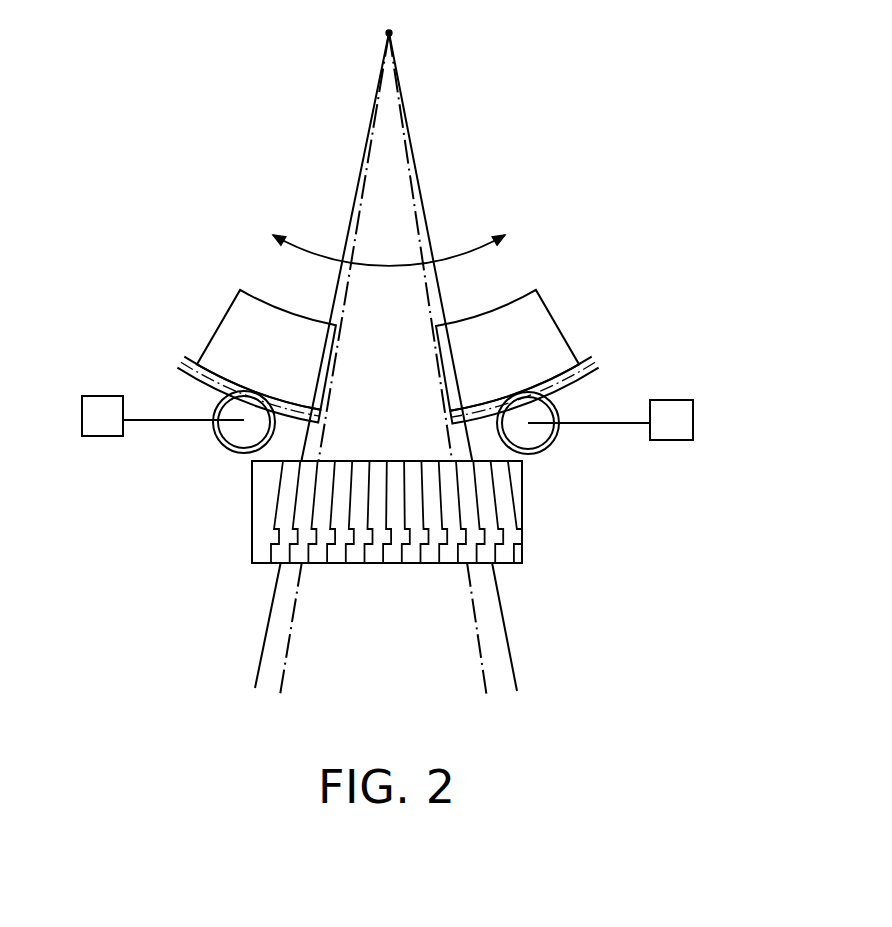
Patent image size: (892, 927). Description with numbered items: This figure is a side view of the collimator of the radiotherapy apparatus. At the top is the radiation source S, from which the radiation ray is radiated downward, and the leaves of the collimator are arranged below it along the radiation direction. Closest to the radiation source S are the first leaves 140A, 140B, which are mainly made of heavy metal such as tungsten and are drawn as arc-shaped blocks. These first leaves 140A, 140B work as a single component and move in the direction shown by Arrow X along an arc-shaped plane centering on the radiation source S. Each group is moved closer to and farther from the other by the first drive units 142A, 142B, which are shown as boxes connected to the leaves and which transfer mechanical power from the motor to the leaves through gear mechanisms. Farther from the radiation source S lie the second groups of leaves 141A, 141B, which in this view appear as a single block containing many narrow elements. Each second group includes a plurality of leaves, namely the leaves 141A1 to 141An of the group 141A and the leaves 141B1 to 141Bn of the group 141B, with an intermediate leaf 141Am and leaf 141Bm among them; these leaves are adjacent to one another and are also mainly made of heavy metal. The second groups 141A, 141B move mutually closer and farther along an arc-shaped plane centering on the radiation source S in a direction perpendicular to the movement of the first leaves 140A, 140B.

The radiation source S is at (391, 35).
The arrow X is at (389, 226).
The first leaf 140A is at (219, 327).
The first leaf 140B is at (557, 328).
The second group of leaves 141A is at (438, 562).
The second group of leaves 141B is at (438, 562).
The leaf 141A1 is at (225, 545).
The leaf 141B1 is at (262, 527).
The leaf 141Am is at (376, 555).
The leaf 141Bm is at (344, 566).
The leaf 141An is at (574, 562).
The leaf 141Bn is at (526, 505).
The first drive unit 142A is at (97, 430).
The first drive unit 142B is at (680, 402).